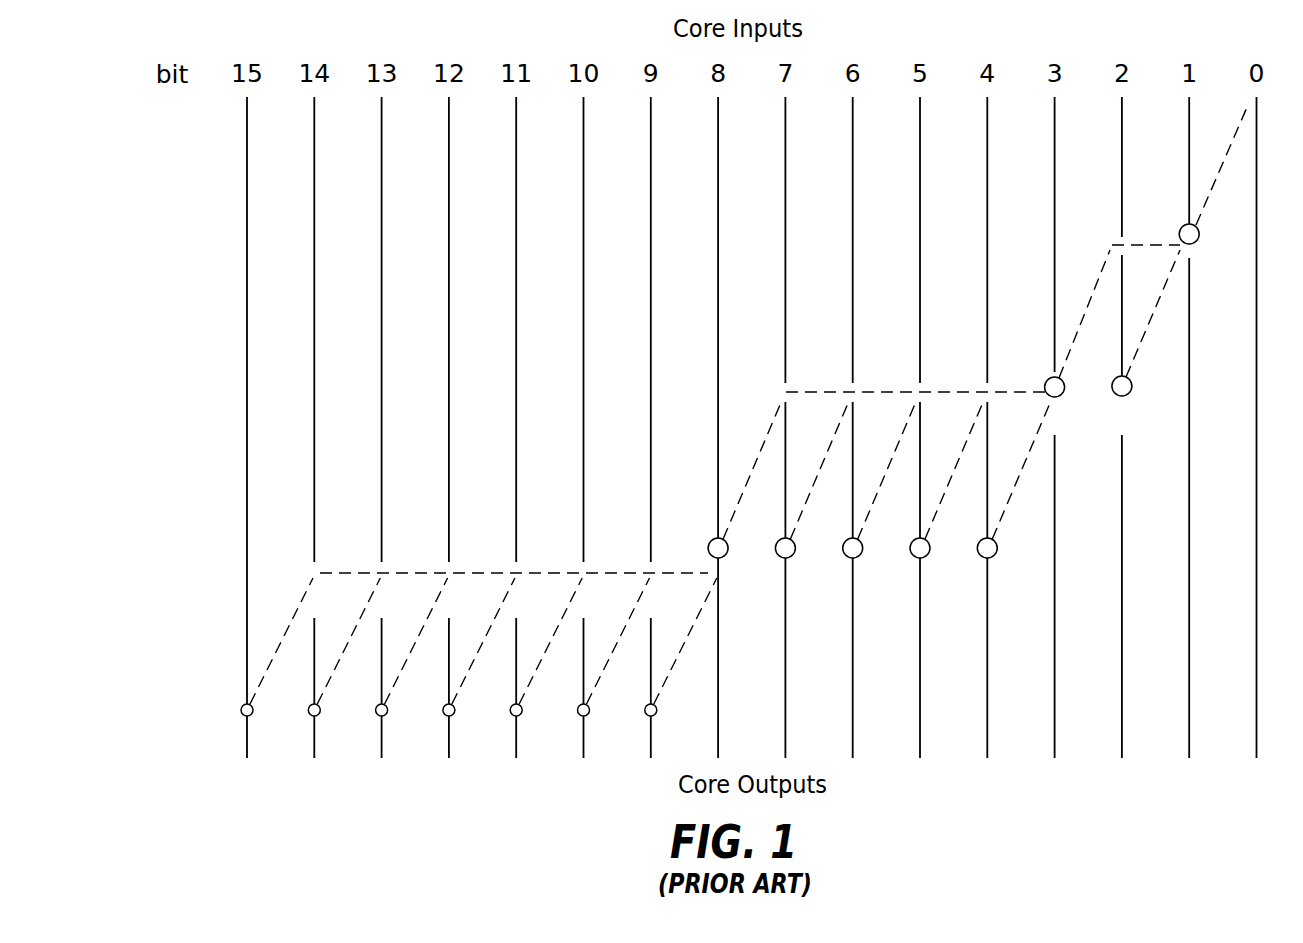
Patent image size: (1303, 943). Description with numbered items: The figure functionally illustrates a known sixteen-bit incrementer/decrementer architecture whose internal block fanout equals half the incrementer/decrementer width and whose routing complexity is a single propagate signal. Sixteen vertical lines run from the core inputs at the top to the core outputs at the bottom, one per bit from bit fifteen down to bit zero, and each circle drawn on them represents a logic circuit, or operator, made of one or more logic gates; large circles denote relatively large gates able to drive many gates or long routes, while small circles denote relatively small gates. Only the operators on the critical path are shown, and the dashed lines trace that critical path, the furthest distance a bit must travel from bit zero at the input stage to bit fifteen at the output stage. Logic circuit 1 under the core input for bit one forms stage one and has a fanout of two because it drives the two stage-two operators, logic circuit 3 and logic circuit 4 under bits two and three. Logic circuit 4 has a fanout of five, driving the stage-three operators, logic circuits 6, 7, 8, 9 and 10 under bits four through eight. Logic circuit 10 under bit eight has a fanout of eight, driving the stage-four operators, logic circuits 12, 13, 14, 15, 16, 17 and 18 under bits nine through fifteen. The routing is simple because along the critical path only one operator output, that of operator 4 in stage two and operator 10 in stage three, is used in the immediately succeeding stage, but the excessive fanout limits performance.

The logic circuit 1 is at (1199, 236).
The logic circuit 3 is at (1132, 386).
The logic circuit 4 is at (1065, 386).
The logic circuit 6 is at (997, 549).
The logic circuit 7 is at (930, 549).
The logic circuit 8 is at (863, 549).
The logic circuit 9 is at (795, 549).
The logic circuit 10 is at (728, 549).
The logic circuit 12 is at (657, 711).
The logic circuit 13 is at (590, 711).
The logic circuit 14 is at (522, 711).
The logic circuit 15 is at (455, 711).
The logic circuit 16 is at (388, 711).
The logic circuit 17 is at (320, 711).
The logic circuit 18 is at (253, 711).